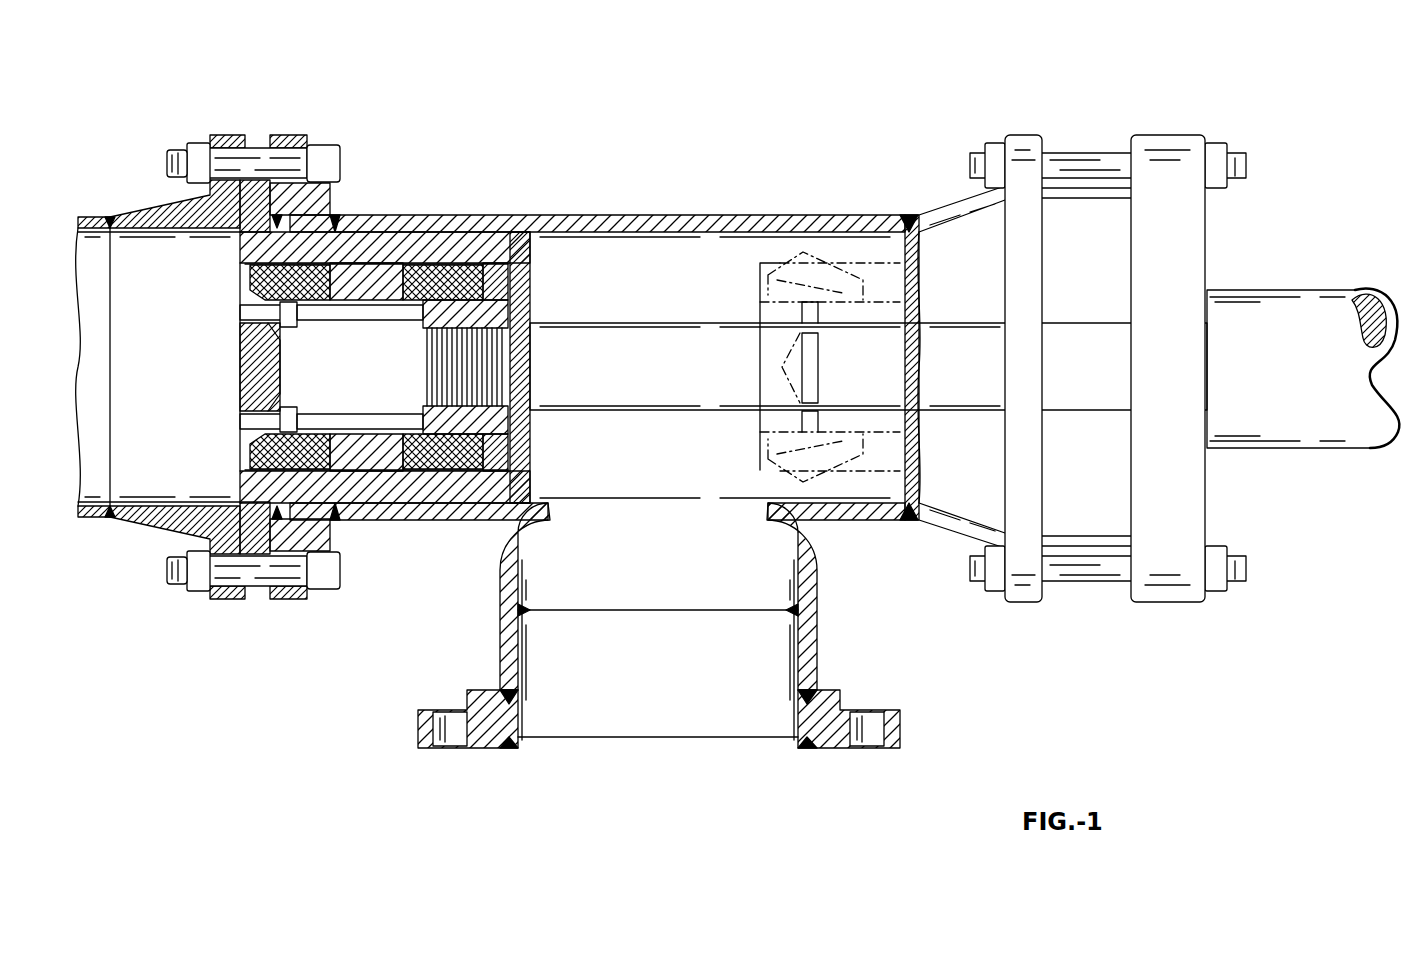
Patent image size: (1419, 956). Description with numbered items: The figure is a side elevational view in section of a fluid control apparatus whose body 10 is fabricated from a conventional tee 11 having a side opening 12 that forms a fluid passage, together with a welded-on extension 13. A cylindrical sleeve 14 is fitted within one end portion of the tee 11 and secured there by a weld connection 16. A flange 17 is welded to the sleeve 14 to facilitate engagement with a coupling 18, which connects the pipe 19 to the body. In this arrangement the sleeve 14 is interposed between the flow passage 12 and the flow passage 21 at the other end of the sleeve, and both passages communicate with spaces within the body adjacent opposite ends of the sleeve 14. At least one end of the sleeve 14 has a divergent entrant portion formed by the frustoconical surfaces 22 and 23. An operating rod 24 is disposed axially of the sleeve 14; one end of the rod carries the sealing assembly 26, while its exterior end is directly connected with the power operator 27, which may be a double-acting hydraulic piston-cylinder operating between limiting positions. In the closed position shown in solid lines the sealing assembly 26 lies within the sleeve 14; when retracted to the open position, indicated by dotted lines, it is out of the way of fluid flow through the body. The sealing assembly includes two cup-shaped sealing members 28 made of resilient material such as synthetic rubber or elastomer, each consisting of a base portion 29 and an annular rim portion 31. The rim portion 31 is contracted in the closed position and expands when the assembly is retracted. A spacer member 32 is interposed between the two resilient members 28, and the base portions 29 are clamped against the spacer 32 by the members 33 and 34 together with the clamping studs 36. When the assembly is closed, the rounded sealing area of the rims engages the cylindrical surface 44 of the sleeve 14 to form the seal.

The body 10 is at (712, 203).
The tee 11 is at (830, 527).
The side opening 12 is at (672, 672).
The welded-on extension 13 is at (815, 653).
The cylindrical sleeve 14 is at (443, 240).
The weld connection 16 is at (300, 215).
The flange 17 is at (237, 228).
The coupling 18 is at (255, 133).
The pipe 19 is at (91, 217).
The flow passage 21 is at (148, 474).
The frustoconical surface 22 is at (510, 470).
The frustoconical surface 23 is at (517, 481).
The operating rod 24 is at (662, 333).
The sealing assembly 26 is at (217, 353).
The power operator 27 is at (1270, 310).
The sealing member 28 is at (273, 292).
The base portion 29 is at (333, 333).
The annular rim portion 31 is at (277, 462).
The spacer member 32 is at (373, 297).
The clamping member 33 is at (500, 323).
The clamping member 34 is at (243, 392).
The clamping stud 36 is at (280, 313).
The cylindrical surface 44 is at (378, 240).